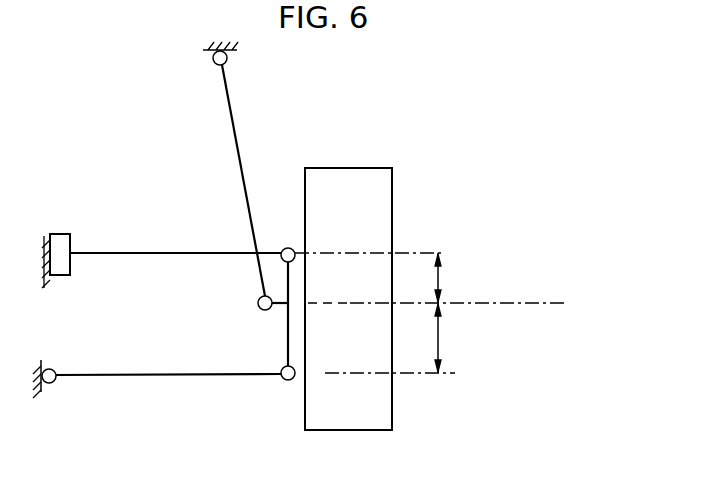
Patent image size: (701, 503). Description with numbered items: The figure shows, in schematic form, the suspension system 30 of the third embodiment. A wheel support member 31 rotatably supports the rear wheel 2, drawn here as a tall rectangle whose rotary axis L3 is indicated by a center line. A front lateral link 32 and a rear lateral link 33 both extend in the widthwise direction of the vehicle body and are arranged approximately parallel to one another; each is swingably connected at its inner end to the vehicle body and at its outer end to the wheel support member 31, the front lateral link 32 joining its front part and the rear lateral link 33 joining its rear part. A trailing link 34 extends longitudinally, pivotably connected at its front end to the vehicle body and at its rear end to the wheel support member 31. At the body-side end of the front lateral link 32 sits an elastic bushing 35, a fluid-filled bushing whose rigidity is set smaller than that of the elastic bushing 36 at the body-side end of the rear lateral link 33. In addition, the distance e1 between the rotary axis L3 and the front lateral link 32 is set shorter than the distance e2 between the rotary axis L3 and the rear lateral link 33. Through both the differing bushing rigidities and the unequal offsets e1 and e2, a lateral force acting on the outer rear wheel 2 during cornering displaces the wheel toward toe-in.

The wheel 2 is at (392, 190).
The suspension system 30 is at (372, 118).
The wheel support member 31 is at (288, 333).
The front lateral link 32 is at (165, 252).
The rear lateral link 33 is at (165, 377).
The trailing link 34 is at (237, 143).
The elastic bushing 35 is at (60, 234).
The elastic bushing 36 is at (55, 384).
The rotary axis L3 is at (520, 302).
The distance e1 is at (456, 278).
The distance e2 is at (456, 338).